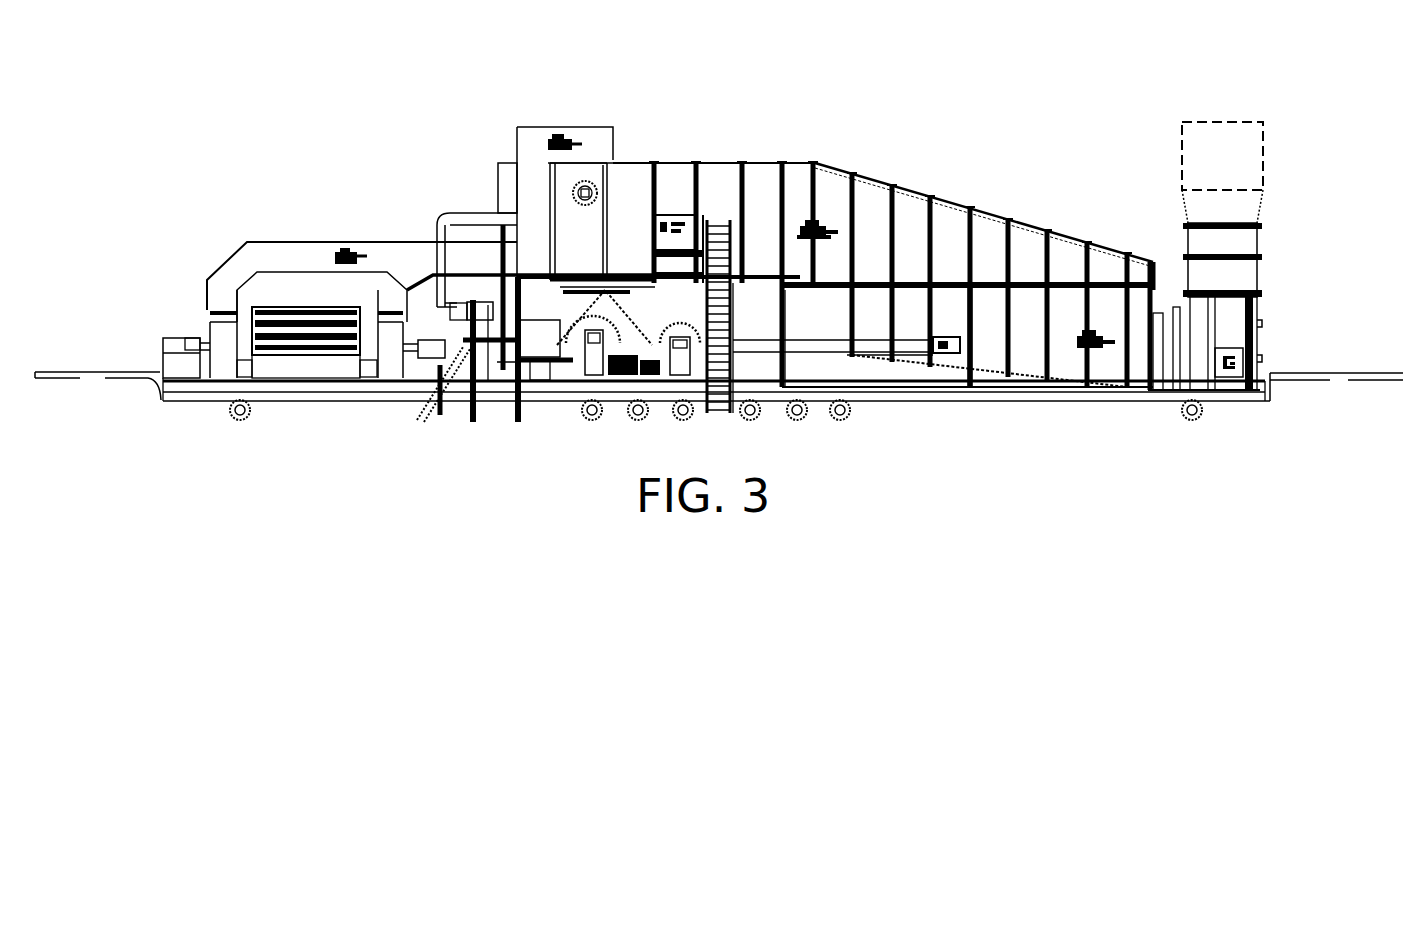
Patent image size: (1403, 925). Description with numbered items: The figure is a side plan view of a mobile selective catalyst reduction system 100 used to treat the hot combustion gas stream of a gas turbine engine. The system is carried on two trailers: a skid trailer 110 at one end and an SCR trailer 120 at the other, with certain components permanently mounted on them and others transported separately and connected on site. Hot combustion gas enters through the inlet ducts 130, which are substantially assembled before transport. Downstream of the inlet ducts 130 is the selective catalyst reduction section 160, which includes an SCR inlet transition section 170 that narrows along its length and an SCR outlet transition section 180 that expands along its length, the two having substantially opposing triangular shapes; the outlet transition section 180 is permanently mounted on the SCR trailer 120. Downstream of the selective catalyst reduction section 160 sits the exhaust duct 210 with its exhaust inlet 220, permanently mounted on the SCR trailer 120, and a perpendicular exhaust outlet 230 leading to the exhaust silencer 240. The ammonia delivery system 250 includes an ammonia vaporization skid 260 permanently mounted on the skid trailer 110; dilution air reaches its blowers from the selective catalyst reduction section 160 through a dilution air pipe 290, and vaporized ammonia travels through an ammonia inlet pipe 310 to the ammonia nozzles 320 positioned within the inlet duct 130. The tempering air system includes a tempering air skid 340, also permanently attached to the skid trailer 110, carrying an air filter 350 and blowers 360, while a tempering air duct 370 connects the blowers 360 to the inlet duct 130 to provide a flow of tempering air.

The mobile selective catalyst reduction system 100 is at (195, 93).
The skid trailer 110 is at (150, 408).
The SCR trailer 120 is at (1336, 382).
The inlet ducts 130 is at (628, 148).
The selective catalyst reduction section 160 is at (946, 190).
The SCR inlet transition section 170 is at (1028, 229).
The SCR outlet transition section 180 is at (1056, 378).
The exhaust duct 210 is at (1268, 238).
The exhaust inlet 220 is at (1229, 388).
The exhaust outlet 230 is at (1262, 336).
The exhaust silencer 240 is at (1264, 156).
The ammonia delivery system 250 is at (549, 400).
The ammonia vaporization skid 260 is at (620, 398).
The dilution air pipe 290 is at (870, 355).
The ammonia inlet pipe 310 is at (480, 213).
The ammonia nozzles 320 is at (265, 392).
The tempering air skid 340 is at (337, 400).
The air filter 350 is at (339, 374).
The blowers 360 is at (166, 338).
The tempering air duct 370 is at (306, 242).